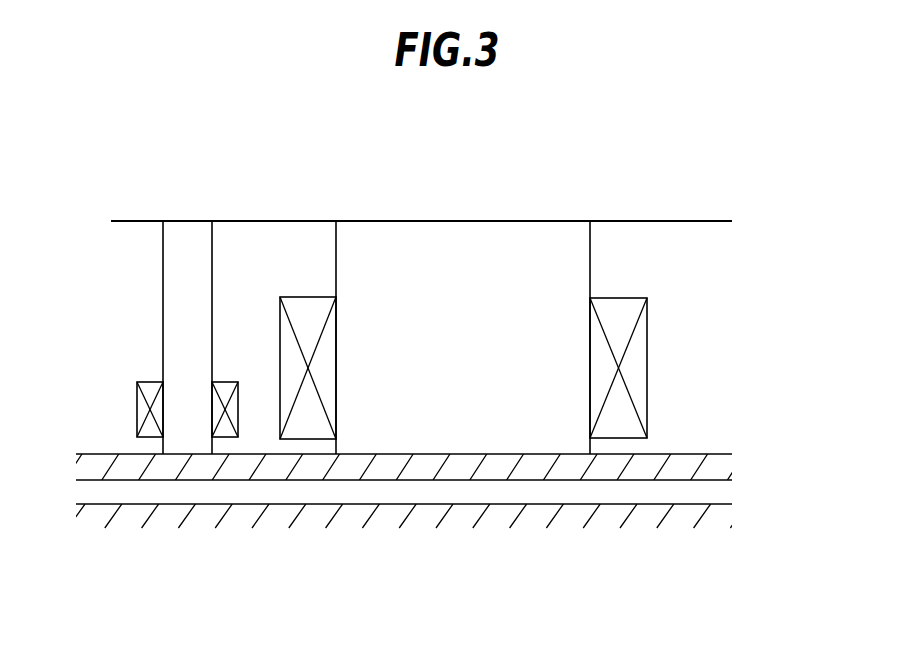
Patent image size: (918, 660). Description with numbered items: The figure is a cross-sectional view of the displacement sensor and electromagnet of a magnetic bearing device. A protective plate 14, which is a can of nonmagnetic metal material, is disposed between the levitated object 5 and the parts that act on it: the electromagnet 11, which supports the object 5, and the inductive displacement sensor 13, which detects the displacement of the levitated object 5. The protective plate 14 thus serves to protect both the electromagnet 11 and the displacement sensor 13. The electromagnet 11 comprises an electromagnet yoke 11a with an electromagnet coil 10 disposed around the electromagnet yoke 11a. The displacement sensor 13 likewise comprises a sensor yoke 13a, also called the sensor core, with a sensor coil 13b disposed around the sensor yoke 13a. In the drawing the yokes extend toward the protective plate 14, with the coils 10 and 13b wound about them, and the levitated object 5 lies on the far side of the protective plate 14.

The levitated object 5 is at (391, 518).
The electromagnet coil 10 is at (658, 361).
The electromagnet 11 is at (477, 212).
The electromagnet yoke 11a is at (562, 257).
The inductive displacement sensor 13 is at (141, 292).
The sensor yoke 13a is at (177, 288).
The sensor coil 13b is at (138, 412).
The protective plate 14 is at (227, 463).